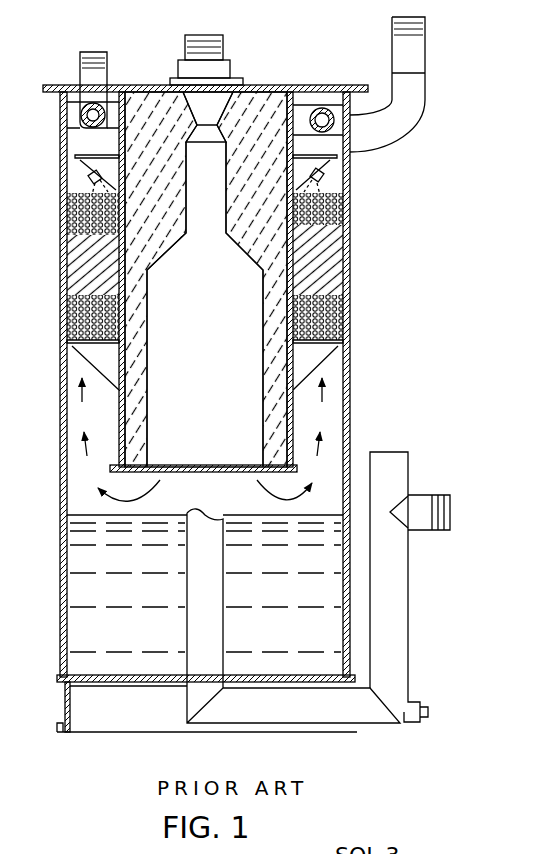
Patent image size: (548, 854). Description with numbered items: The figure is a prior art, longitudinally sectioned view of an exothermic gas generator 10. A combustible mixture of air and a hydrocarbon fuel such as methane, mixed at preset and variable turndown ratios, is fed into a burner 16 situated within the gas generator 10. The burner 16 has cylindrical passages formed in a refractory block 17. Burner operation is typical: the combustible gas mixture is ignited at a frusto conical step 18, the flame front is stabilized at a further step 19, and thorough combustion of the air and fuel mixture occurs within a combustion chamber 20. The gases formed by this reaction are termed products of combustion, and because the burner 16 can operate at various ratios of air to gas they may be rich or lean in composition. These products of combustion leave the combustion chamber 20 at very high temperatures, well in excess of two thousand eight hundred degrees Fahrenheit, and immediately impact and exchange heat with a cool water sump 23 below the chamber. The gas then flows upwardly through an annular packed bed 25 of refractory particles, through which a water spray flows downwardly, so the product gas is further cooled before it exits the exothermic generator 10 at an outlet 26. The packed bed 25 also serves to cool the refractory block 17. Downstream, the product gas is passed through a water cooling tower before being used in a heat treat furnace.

The exothermic gas generator 10 is at (436, 126).
The burner 16 is at (245, 61).
The refractory block 17 is at (152, 120).
The frusto conical step 18 is at (228, 138).
The step 19 is at (264, 273).
The combustion chamber 20 is at (225, 371).
The cool water sump 23 is at (268, 516).
The annular packed bed 25 is at (347, 206).
The outlet 26 is at (428, 45).